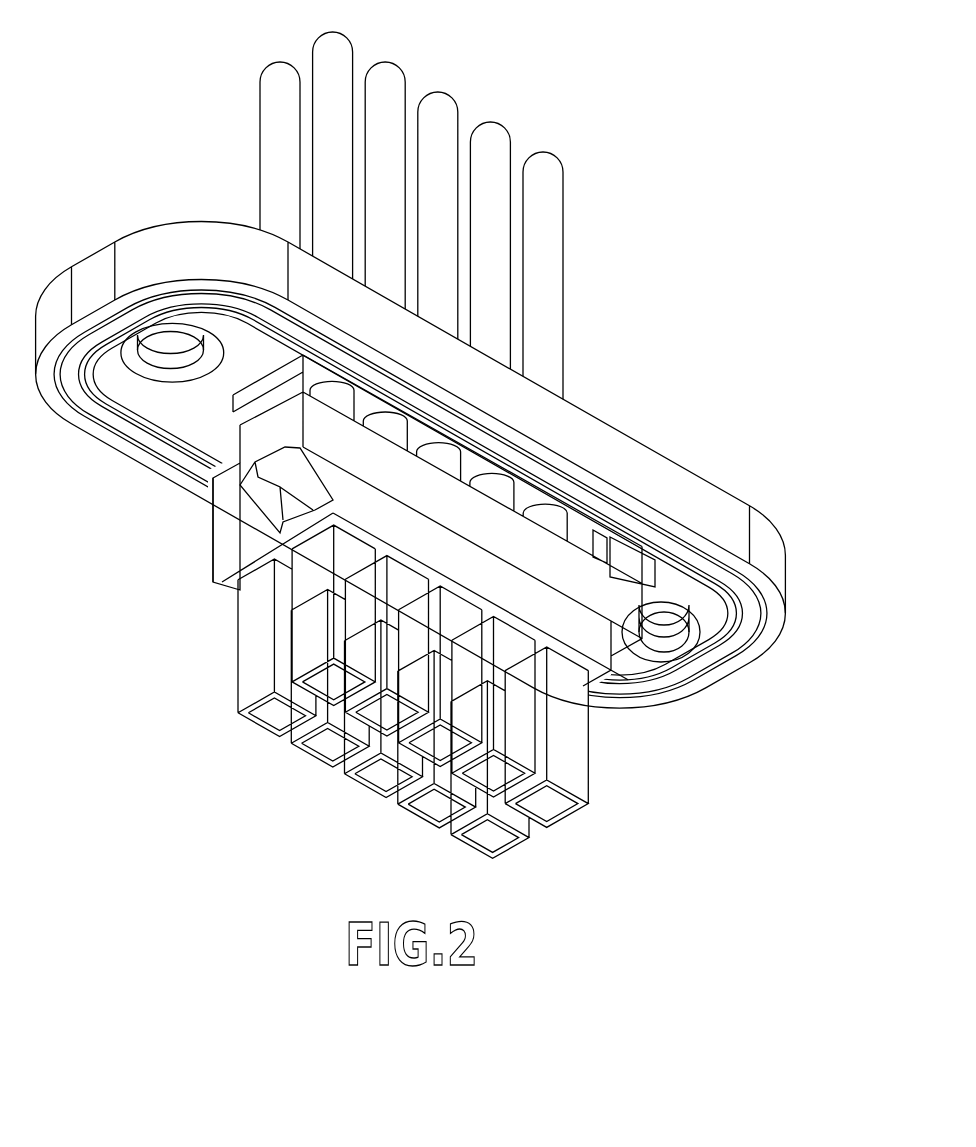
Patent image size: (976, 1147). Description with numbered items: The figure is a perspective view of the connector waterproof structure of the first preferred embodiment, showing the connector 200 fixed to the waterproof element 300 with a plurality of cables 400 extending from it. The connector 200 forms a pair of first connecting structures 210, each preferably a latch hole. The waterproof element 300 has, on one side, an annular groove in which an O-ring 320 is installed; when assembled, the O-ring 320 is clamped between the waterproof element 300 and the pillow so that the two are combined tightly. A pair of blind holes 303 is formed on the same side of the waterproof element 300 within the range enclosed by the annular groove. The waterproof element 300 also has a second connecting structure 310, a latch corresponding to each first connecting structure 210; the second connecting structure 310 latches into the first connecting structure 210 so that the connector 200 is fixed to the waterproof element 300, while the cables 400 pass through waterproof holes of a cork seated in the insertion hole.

The connector 200 is at (608, 763).
The first connecting structure 210 is at (283, 512).
The waterproof element 300 is at (653, 472).
The blind hole 303 is at (167, 363).
The second connecting structure 310 is at (278, 483).
The O-ring 320 is at (712, 685).
The cable 400 is at (552, 215).